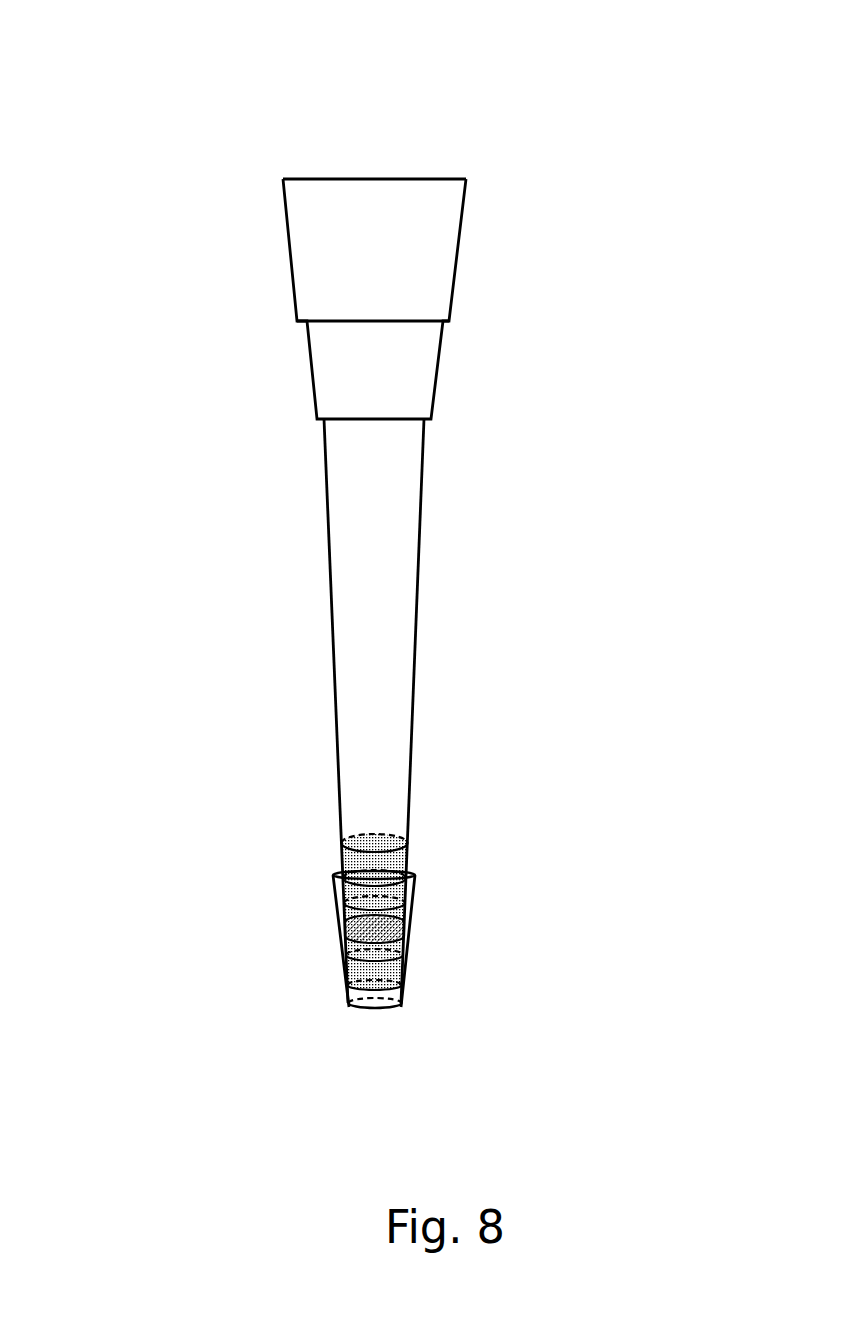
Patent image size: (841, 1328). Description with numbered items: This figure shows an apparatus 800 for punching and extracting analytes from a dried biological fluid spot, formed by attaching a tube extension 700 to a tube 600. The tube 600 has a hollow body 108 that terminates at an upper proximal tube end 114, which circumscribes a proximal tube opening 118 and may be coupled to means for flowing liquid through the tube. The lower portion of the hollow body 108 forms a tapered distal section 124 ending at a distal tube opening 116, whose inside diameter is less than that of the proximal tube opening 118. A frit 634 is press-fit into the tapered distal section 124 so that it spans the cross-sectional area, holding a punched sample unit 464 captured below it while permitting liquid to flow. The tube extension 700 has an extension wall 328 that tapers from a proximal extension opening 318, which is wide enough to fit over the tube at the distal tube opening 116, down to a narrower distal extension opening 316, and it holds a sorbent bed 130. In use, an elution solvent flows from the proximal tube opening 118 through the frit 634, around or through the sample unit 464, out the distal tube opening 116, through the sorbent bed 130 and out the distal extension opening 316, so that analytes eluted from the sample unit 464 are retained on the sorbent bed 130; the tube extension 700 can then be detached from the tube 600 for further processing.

The apparatus for punching and extracting analytes 800 is at (678, 106).
The tube 600 is at (159, 290).
The proximal tube end 114 is at (474, 148).
The proximal tube opening 118 is at (287, 177).
The hollow body 108 is at (327, 535).
The tube extension 700 is at (206, 942).
The distal section 124 is at (267, 833).
The frit 634 is at (408, 855).
The proximal extension opening 318 is at (413, 878).
The sample unit 464 is at (410, 932).
The extension wall 328 is at (333, 895).
The distal tube opening 116 is at (338, 955).
The sorbent bed 130 is at (407, 970).
The distal extension opening 316 is at (400, 1007).